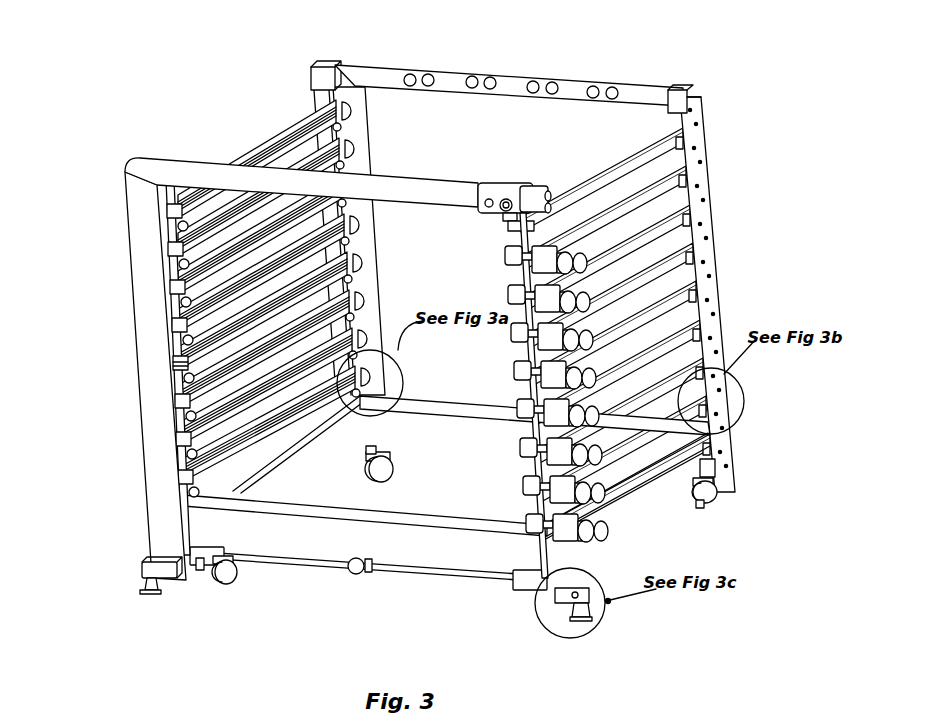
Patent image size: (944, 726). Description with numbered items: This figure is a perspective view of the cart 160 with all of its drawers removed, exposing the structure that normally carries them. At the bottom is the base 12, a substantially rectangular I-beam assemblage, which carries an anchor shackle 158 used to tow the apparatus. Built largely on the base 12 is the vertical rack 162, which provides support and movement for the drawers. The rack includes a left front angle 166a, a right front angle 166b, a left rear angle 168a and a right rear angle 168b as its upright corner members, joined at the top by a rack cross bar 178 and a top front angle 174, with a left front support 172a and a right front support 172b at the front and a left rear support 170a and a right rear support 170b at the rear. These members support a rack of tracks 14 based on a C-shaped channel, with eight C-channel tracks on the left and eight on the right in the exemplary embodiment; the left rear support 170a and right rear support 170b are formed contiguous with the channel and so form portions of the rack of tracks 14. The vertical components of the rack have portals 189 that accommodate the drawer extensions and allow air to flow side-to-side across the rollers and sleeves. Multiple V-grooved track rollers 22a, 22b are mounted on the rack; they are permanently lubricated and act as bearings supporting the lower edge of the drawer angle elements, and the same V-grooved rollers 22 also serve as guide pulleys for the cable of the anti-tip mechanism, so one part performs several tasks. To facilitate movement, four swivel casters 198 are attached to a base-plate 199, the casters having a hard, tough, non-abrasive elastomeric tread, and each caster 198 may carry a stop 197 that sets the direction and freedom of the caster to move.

The base 12 is at (308, 544).
The rack of tracks 14 is at (262, 142).
The V-grooved rollers 22 is at (487, 80).
The V-grooved track roller 22a is at (173, 357).
The V-grooved track roller 22b is at (505, 360).
The anchor shackle 158 is at (362, 575).
The cart 160 is at (735, 160).
The vertical rack 162 is at (147, 479).
The left front angle 166a is at (138, 212).
The right front angle 166b is at (552, 224).
The left rear angle 168a is at (362, 166).
The right rear angle 168b is at (715, 233).
The left rear support 170a is at (350, 86).
The right rear support 170b is at (677, 90).
The left front support 172a is at (173, 210).
The right front support 172b is at (533, 482).
The top front angle 174 is at (307, 183).
The rack cross bar 178 is at (573, 76).
The portals 189 is at (371, 326).
The stop 197 is at (720, 464).
The swivel casters 198 is at (375, 480).
The base-plate 199 is at (199, 566).